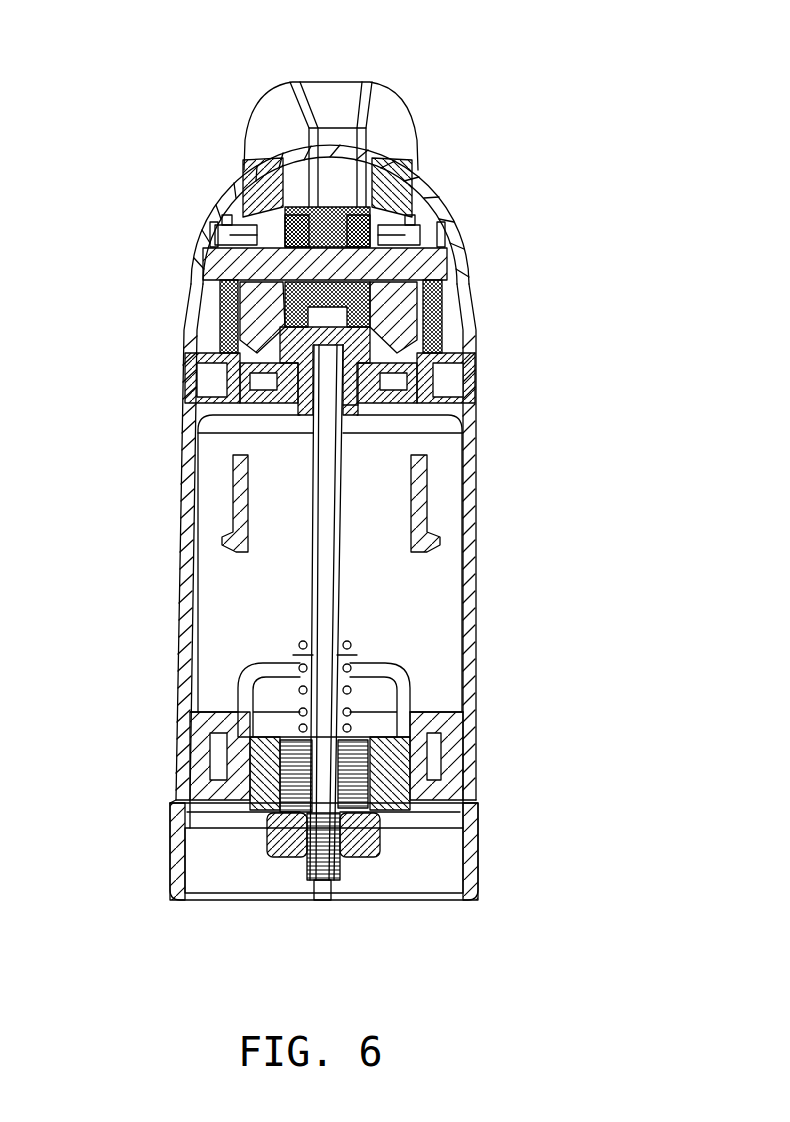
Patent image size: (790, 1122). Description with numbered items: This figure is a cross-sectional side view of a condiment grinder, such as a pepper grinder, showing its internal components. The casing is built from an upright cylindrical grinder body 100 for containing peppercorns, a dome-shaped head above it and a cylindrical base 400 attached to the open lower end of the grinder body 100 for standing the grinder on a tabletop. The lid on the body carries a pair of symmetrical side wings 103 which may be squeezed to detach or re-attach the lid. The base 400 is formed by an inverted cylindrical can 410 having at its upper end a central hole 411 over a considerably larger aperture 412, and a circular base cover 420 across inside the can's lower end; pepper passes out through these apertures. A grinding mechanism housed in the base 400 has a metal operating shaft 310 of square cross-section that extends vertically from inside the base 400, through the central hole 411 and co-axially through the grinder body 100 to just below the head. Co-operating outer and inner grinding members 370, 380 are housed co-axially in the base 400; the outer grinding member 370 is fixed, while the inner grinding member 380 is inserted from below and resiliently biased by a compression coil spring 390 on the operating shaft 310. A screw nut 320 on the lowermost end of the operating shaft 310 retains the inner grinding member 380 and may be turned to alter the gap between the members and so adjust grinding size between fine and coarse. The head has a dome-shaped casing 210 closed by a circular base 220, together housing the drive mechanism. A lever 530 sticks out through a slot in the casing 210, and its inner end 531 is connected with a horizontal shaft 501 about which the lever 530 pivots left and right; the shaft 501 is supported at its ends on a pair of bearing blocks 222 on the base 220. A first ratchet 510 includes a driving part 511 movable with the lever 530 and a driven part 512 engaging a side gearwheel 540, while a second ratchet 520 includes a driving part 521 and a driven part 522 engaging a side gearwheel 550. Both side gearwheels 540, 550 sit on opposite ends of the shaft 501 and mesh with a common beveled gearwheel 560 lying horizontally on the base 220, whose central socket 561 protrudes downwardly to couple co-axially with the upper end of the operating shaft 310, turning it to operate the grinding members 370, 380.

The grinder body 100 is at (487, 487).
The side wings 103 is at (418, 510).
The dome-shaped casing 210 is at (197, 263).
The base of the head 220 is at (475, 379).
The bearing blocks 222 is at (435, 330).
The operating shaft 310 is at (333, 596).
The screw nut 320 is at (278, 843).
The outer grinding member 370 is at (390, 758).
The inner grinding member 380 is at (367, 810).
The compression coil spring 390 is at (303, 698).
The base 400 is at (408, 766).
The inverted cylindrical can 410 is at (488, 762).
The central hole 411 is at (348, 647).
The aperture 412 is at (375, 727).
The base cover 420 is at (427, 818).
The shaft 501 is at (443, 263).
The first ratchet 510 is at (145, 108).
The driving part 511 is at (297, 213).
The driven part 512 is at (280, 227).
The second ratchet 520 is at (545, 112).
The driving part 521 is at (375, 200).
The driven part 522 is at (383, 227).
The lever 530 is at (331, 87).
The inner end of the lever 531 is at (341, 210).
The side gearwheel 540 is at (233, 221).
The side gearwheel 550 is at (417, 223).
The beveled gearwheel 560 is at (380, 343).
The central socket 561 is at (352, 413).